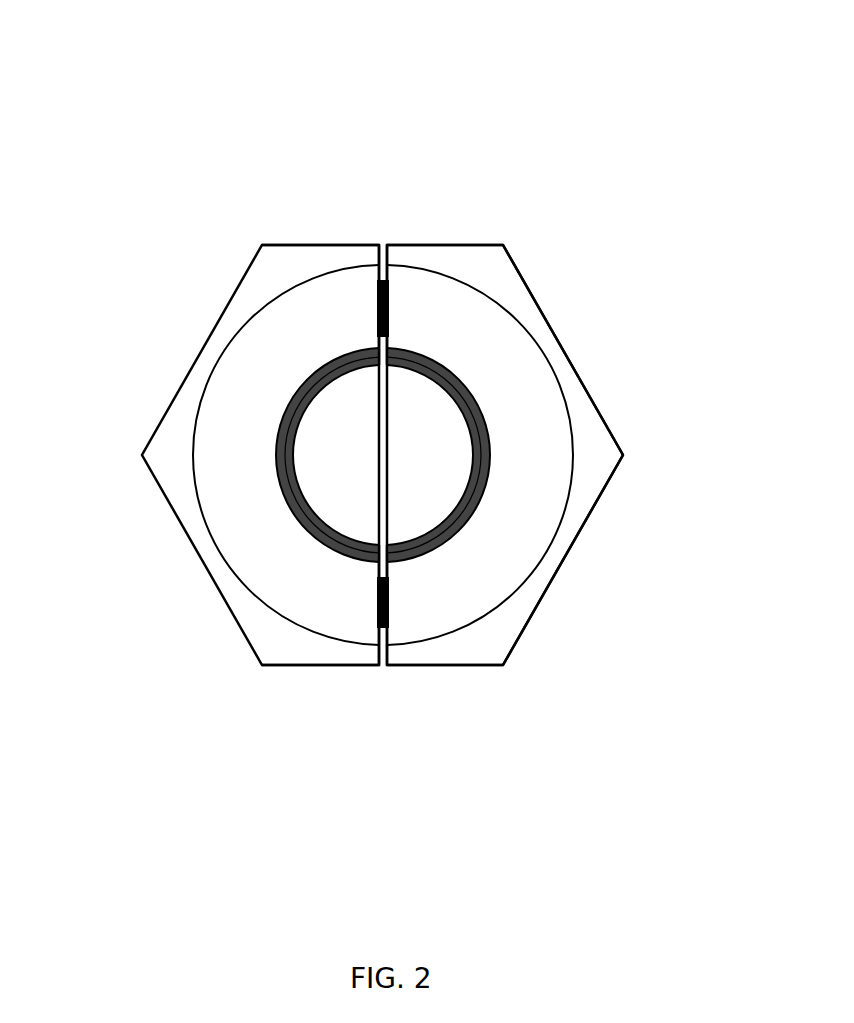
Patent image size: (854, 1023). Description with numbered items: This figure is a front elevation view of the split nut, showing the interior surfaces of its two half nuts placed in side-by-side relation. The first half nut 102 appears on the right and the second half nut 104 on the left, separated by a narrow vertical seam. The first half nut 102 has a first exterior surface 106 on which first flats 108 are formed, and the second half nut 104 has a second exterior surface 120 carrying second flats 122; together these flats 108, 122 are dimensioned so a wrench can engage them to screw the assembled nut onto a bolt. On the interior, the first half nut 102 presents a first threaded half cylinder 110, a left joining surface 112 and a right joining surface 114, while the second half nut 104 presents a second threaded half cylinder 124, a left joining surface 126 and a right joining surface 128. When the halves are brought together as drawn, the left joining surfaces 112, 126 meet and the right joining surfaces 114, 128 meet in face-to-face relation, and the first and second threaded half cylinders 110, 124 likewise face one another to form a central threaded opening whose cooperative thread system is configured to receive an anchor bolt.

The first half nut 102 is at (542, 470).
The second half nut 104 is at (260, 476).
The first exterior surface 106 is at (573, 365).
The first flats 108 is at (520, 270).
The first threaded half cylinder 110 is at (483, 487).
The left joining surface 112 is at (395, 612).
The right joining surface 114 is at (392, 285).
The second exterior surface 120 is at (213, 318).
The second flats 122 is at (215, 790).
The second threaded half cylinder 124 is at (278, 462).
The left joining surface 126 is at (377, 615).
The right joining surface 128 is at (377, 250).